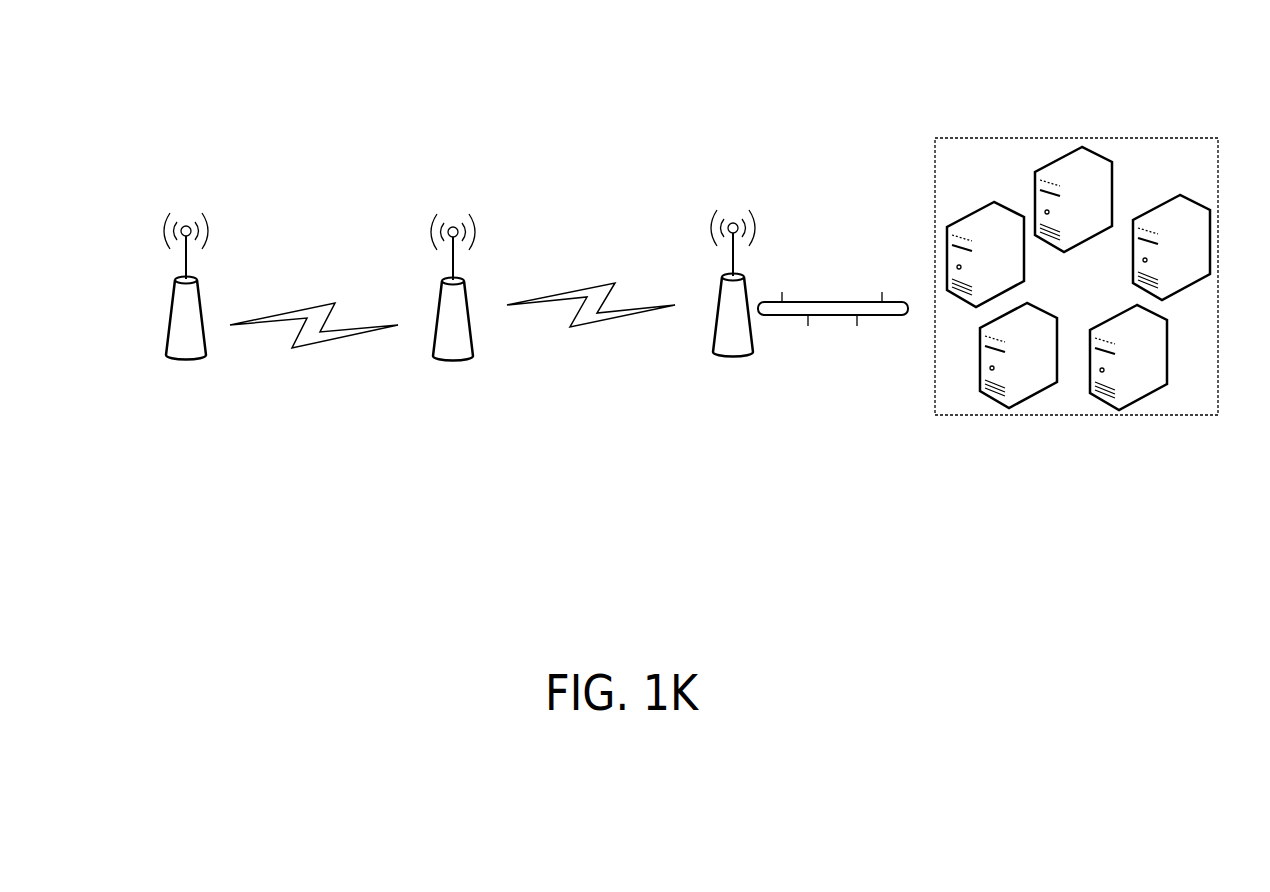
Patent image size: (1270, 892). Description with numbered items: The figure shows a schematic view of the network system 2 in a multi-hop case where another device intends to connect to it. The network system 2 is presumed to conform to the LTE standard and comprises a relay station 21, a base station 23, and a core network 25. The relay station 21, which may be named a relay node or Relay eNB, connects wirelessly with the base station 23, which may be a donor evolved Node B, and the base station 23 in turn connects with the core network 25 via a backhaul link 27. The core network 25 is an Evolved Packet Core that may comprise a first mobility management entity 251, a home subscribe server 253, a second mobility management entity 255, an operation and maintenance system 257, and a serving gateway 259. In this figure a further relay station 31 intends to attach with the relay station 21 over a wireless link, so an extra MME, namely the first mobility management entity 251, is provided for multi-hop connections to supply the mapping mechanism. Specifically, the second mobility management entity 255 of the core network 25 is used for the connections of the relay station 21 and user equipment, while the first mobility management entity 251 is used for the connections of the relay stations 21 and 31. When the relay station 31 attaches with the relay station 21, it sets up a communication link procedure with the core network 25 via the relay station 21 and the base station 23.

The network system 2 is at (712, 155).
The relay station 31 is at (160, 317).
The relay station 21 is at (426, 318).
The base station 23 is at (706, 316).
The backhaul link 27 is at (832, 302).
The core network 25 is at (1081, 415).
The first mobility management entity 251 is at (1073, 199).
The home subscribe server 253 is at (1171, 247).
The second mobility management entity 255 is at (985, 254).
The operation and maintenance system 257 is at (1128, 357).
The serving gateway 259 is at (1018, 355).